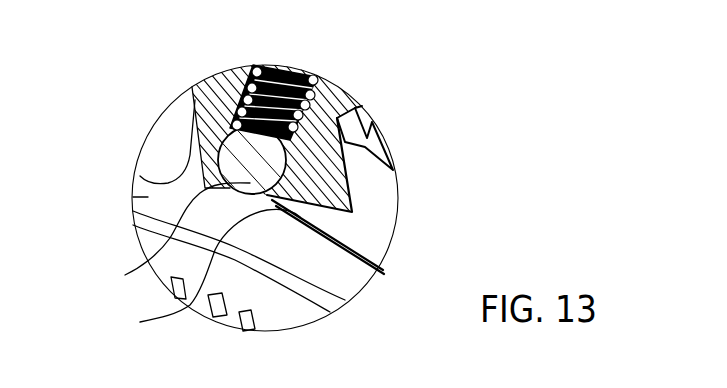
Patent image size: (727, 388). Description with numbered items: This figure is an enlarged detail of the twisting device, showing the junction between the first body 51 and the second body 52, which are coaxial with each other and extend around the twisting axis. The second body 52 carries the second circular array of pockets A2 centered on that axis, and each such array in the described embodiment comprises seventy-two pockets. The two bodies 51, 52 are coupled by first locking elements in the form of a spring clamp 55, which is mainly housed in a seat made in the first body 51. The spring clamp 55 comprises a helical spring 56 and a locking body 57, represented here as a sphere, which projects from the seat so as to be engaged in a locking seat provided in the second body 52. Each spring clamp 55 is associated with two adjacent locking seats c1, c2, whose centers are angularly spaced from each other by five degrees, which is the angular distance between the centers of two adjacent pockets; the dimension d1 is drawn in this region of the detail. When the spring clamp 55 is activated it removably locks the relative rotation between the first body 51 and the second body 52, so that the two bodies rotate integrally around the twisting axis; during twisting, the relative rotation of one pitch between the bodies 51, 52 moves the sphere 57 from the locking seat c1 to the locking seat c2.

The first body 51 is at (388, 188).
The second body 52 is at (133, 207).
The spring clamp 55 is at (290, 68).
The helical spring 56 is at (215, 85).
The locking body 57 is at (222, 143).
The distance d1 is at (133, 180).
The locking seat c1 is at (150, 268).
The locking seat c2 is at (140, 322).
The second circular array of pockets A2 is at (208, 316).